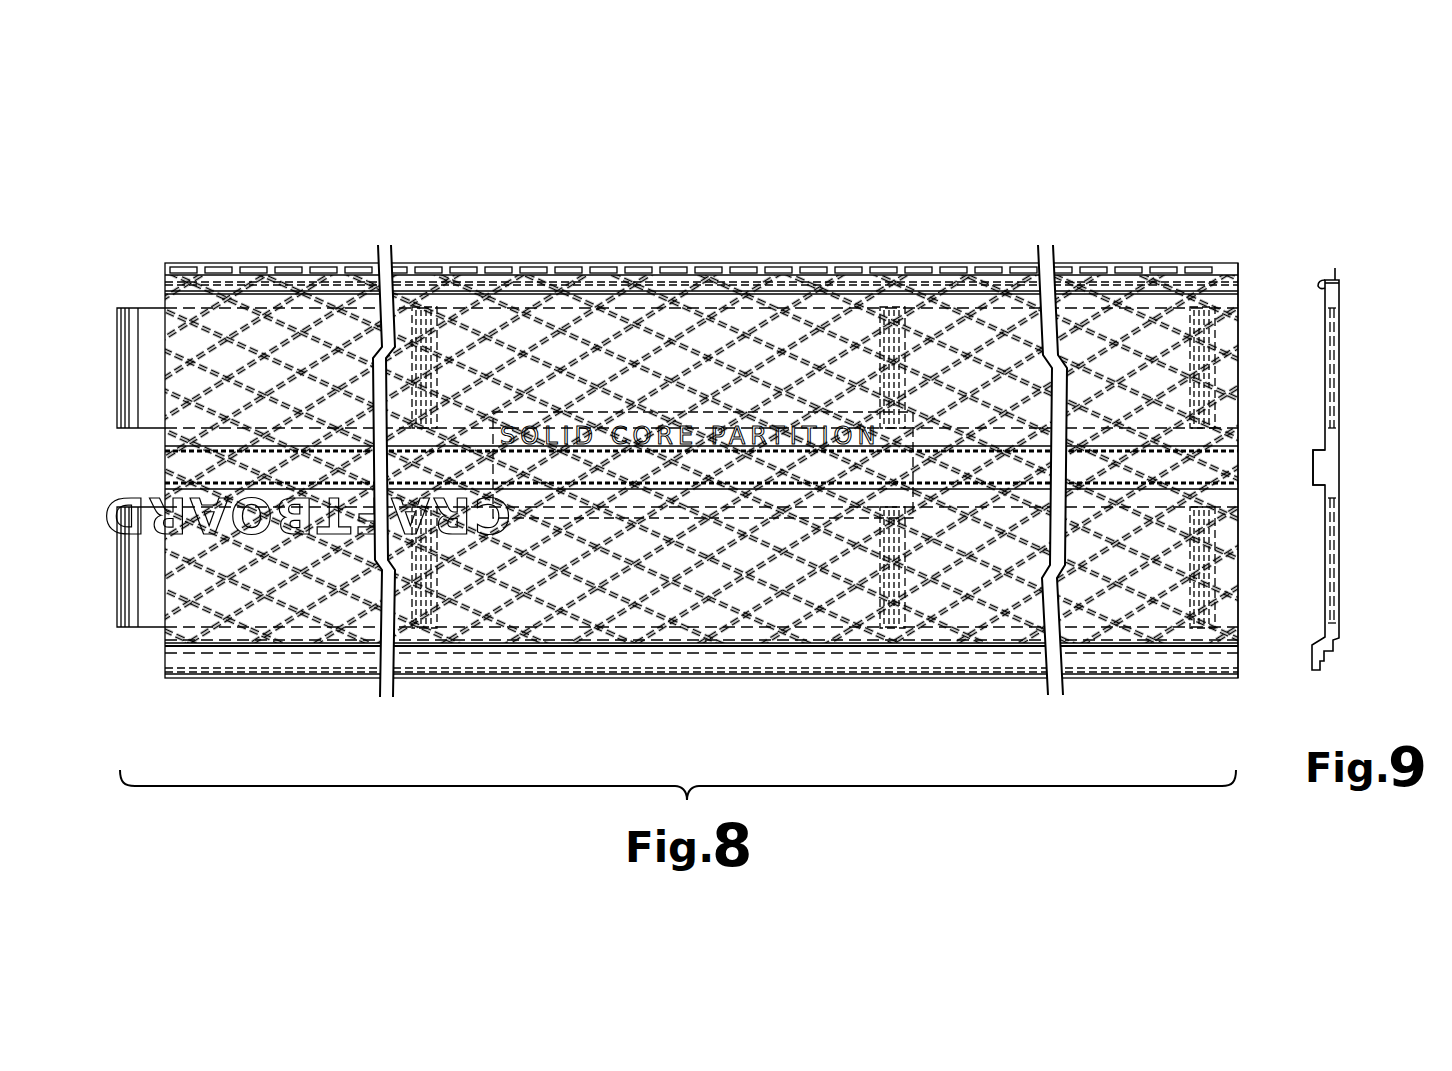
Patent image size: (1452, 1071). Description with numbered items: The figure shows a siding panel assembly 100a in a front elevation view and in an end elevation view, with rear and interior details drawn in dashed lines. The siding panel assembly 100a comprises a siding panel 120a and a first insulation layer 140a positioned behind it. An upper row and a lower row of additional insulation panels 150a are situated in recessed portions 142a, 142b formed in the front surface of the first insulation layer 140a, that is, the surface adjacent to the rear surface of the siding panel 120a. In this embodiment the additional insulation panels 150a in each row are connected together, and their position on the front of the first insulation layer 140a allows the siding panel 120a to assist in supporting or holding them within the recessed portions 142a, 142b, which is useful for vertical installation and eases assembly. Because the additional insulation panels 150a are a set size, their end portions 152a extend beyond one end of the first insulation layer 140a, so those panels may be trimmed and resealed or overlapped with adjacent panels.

In FIG. 8, the siding panel assembly 100a is at (444, 164).
In FIG. 9, the siding panel assembly 100a is at (1385, 213).
In FIG. 8, the siding panel 120a is at (753, 275).
In FIG. 9, the siding panel 120a is at (1321, 283).
In FIG. 8, the first insulation layer 140a is at (1239, 573).
In FIG. 9, the first insulation layer 140a is at (1322, 466).
In FIG. 8, the recessed portion 142a is at (632, 300).
In FIG. 8, the recessed portion 142b is at (822, 632).
In FIG. 8, the additional insulation panels 150a is at (272, 345).
In FIG. 9, the additional insulation panels 150a is at (1340, 380).
In FIG. 8, the end portions 152a is at (150, 308).